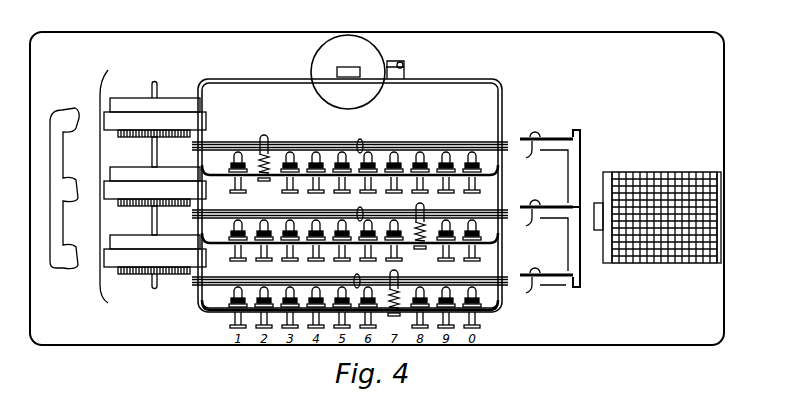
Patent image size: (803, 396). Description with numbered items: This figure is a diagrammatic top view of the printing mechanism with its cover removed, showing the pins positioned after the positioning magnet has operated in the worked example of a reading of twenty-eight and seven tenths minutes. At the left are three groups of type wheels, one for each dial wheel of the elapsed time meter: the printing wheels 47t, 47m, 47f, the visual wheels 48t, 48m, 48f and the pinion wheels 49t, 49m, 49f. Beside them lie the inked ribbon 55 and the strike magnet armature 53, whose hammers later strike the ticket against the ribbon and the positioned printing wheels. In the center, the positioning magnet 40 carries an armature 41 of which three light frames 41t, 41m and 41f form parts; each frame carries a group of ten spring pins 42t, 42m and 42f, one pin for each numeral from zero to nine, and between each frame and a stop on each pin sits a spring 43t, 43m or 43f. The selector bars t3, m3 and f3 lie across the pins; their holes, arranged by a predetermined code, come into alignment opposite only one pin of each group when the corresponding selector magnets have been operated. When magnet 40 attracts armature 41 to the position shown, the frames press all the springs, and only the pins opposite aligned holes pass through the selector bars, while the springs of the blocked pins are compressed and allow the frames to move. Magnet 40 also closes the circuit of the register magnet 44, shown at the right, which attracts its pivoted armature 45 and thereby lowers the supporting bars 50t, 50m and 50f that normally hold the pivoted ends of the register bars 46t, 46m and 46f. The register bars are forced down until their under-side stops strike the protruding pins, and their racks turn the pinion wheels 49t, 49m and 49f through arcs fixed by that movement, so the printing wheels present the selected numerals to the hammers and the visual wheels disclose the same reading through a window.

The positioning magnet 40 is at (374, 58).
The armature 41 is at (497, 84).
The ten-minute pin frame 41t is at (496, 174).
The minute pin frame 41m is at (496, 245).
The fraction-minute pin frame 41f is at (492, 312).
The ten-minute spring pins 42t is at (236, 181).
The minute spring pins 42m is at (237, 252).
The fraction-minute spring pins 42f is at (236, 322).
The ten-minute pin springs 43t is at (232, 168).
The minute pin springs 43m is at (233, 238).
The fraction-minute pin springs 43f is at (233, 306).
The register magnet 44 is at (650, 172).
The pivoted armature 45 is at (581, 168).
The ten-minute register bar 46t is at (550, 133).
The minute register bar 46m is at (546, 203).
The fraction-minute register bar 46f is at (546, 268).
The ten-minute printing wheel 47t is at (113, 134).
The minute printing wheel 47m is at (113, 200).
The fraction-minute printing wheel 47f is at (113, 269).
The ten-minute visual wheel 48t is at (166, 97).
The minute visual wheel 48m is at (170, 164).
The fraction-minute visual wheel 48f is at (170, 232).
The ten-minute pinion wheel 49t is at (133, 137).
The minute pinion wheel 49m is at (135, 207).
The fraction-minute pinion wheel 49f is at (135, 276).
The ten-minute supporting bar 50t is at (537, 145).
The minute supporting bar 50m is at (540, 212).
The fraction-minute supporting bar 50f is at (530, 284).
The strike magnet armature 53 is at (60, 270).
The inked ribbon 55 is at (103, 75).
The ten-minute selector bars t3 is at (361, 139).
The minute selector bars m3 is at (360, 208).
The fraction-minute selector bars f3 is at (356, 276).